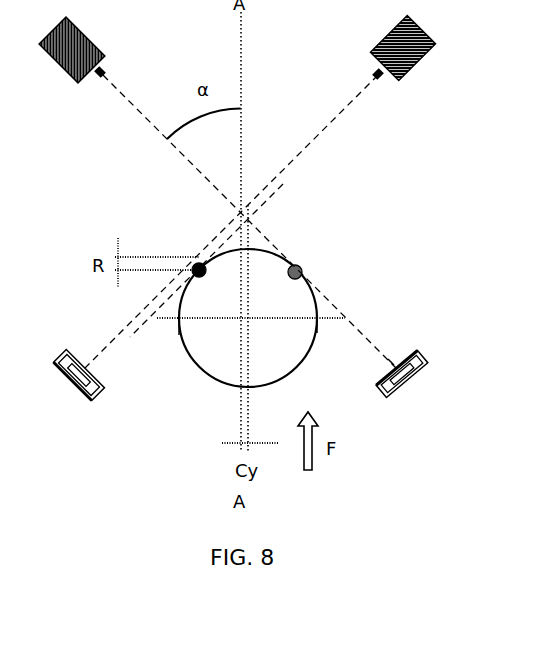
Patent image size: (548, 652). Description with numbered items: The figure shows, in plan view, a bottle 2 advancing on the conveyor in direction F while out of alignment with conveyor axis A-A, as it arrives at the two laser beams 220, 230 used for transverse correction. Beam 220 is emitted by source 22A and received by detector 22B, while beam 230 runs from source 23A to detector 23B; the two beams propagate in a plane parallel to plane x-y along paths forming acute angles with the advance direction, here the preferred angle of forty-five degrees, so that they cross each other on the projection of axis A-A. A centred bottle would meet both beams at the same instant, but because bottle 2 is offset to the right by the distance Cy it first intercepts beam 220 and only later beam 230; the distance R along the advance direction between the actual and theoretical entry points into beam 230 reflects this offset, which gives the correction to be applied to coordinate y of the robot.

The bottle 2 is at (302, 298).
The source of photocell 22 22A is at (100, 42).
The detector of photocell 22 22B is at (413, 352).
The source of photocell 23 23A is at (372, 57).
The detector of photocell 23 23B is at (70, 352).
The laser beam 220 is at (145, 117).
The laser beam 230 is at (333, 123).